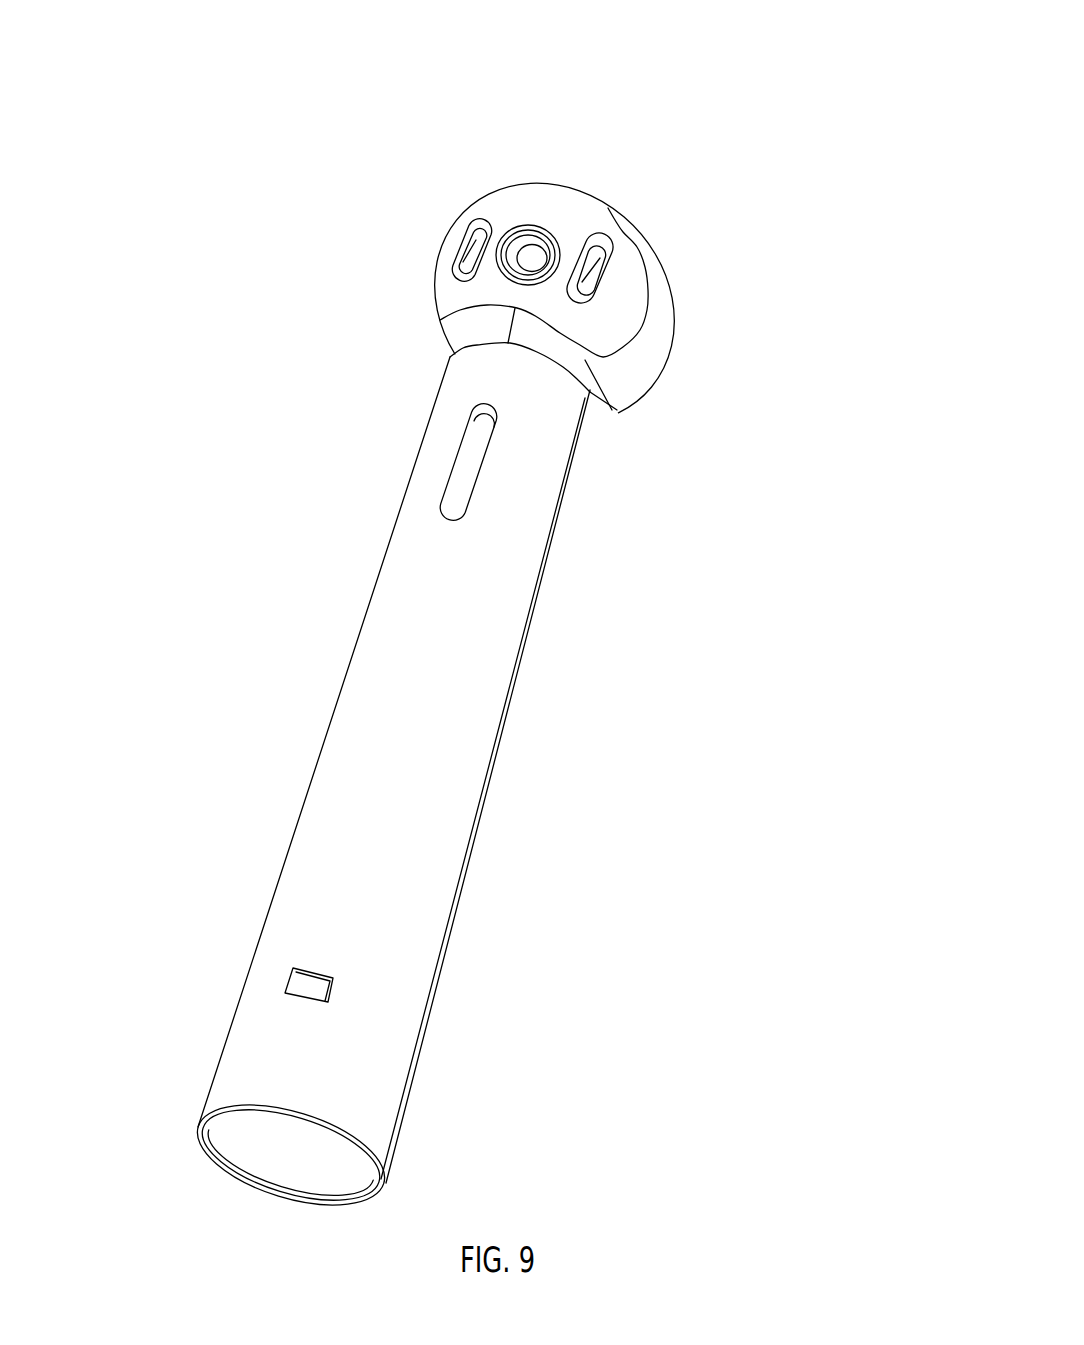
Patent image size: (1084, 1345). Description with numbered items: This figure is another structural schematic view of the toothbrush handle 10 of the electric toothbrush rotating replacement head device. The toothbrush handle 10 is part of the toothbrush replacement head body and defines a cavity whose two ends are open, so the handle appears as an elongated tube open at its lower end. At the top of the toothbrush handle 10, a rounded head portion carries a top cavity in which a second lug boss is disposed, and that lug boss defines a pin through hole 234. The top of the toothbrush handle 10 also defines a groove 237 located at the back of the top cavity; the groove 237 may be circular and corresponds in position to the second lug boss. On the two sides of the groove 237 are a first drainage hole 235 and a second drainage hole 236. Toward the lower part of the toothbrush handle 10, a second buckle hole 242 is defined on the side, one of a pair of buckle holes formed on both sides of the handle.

The toothbrush handle 10 is at (648, 290).
The pin through hole 234 is at (463, 283).
The first drainage hole 235 is at (468, 255).
The second drainage hole 236 is at (597, 253).
The groove 237 is at (532, 272).
The second buckle hole 242 is at (290, 973).